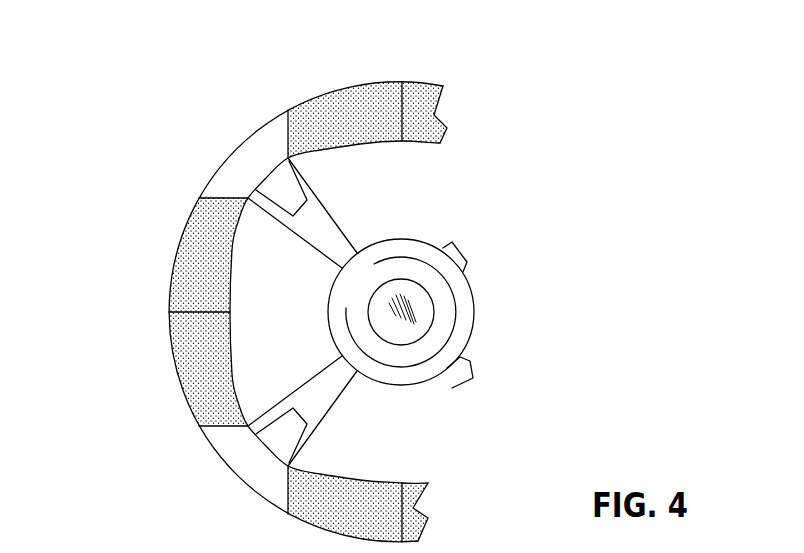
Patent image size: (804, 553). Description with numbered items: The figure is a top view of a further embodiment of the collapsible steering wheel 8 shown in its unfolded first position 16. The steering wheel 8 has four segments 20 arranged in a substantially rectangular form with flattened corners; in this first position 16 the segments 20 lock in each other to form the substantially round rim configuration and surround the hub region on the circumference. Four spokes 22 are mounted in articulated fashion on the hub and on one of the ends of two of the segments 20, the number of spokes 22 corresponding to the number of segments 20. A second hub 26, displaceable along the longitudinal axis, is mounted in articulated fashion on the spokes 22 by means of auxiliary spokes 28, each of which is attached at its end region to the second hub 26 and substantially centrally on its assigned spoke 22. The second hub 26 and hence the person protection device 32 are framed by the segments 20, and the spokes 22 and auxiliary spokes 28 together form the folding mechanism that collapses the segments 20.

The collapsible steering wheel 8 is at (114, 130).
The first position 16 is at (595, 329).
The segments 20 is at (362, 100).
The spokes 22 is at (340, 217).
The second hub 26 is at (460, 323).
The auxiliary spokes 28 is at (350, 243).
The person protection device 32 is at (420, 312).